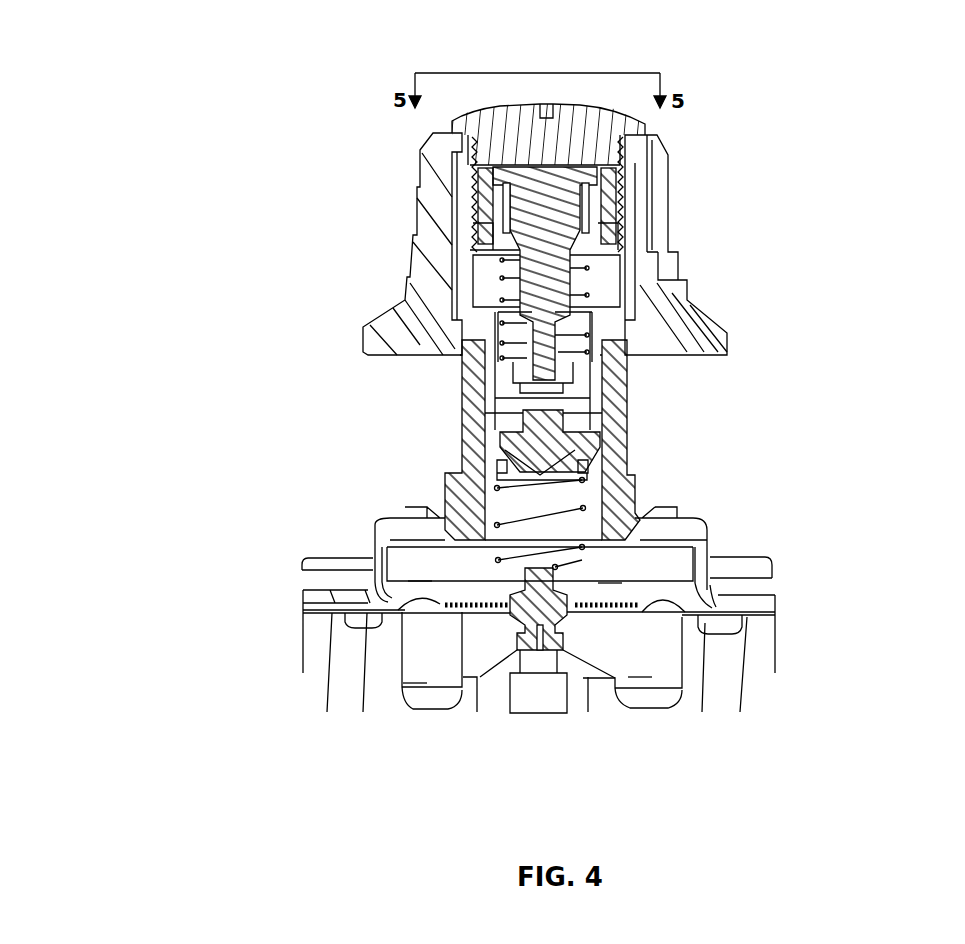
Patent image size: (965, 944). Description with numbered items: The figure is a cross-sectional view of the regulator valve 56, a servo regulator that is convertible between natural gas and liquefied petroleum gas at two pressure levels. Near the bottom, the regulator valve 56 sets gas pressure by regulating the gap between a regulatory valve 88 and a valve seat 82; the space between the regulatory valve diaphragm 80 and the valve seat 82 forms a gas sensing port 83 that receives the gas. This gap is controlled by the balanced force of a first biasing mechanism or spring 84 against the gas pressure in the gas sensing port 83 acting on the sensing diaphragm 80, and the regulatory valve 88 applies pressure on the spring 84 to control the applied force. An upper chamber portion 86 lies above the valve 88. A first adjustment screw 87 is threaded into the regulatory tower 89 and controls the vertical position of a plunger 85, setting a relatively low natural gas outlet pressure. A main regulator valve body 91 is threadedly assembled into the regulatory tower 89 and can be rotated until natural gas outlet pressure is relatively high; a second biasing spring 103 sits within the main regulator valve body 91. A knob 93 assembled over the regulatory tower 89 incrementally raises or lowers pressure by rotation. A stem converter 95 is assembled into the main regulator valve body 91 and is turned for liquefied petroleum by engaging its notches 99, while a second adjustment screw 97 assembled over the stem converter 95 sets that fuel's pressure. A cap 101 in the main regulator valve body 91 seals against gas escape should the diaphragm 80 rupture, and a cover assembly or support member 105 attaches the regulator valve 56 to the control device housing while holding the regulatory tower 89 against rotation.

The regulator valve 56 is at (695, 151).
The regulatory valve diaphragm 80 is at (520, 607).
The valve seat 82 is at (595, 669).
The gas sensing port 83 is at (539, 653).
The first biasing mechanism 84 is at (580, 547).
The first member or plunger 85 is at (597, 438).
The upper chamber portion 86 is at (515, 571).
The first adjustment mechanism 87 is at (490, 449).
The regulatory valve 88 is at (570, 600).
The first valve chamber or regulatory tower 89 is at (620, 432).
The main regulator valve body or second valve chamber 91 is at (632, 186).
The knob 93 is at (658, 228).
The second member or stem converter 95 is at (520, 258).
The second adjustment mechanism 97 is at (470, 151).
The notches 99 is at (542, 105).
The cap 101 is at (577, 107).
The second biasing mechanism 103 is at (560, 263).
The cover assembly or support member 105 is at (390, 527).